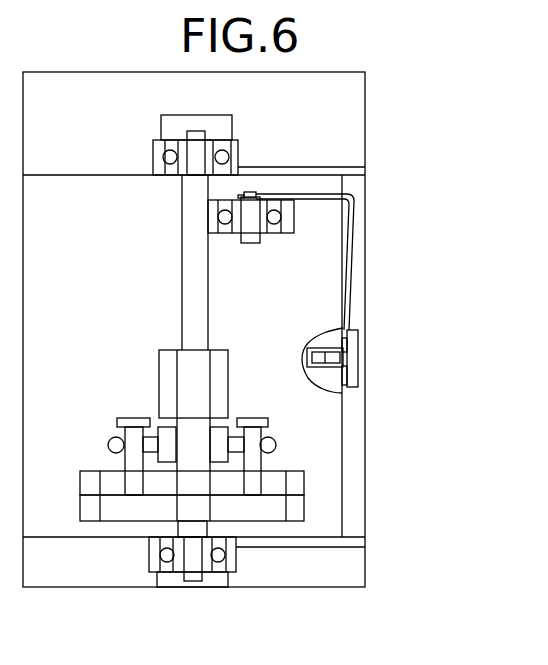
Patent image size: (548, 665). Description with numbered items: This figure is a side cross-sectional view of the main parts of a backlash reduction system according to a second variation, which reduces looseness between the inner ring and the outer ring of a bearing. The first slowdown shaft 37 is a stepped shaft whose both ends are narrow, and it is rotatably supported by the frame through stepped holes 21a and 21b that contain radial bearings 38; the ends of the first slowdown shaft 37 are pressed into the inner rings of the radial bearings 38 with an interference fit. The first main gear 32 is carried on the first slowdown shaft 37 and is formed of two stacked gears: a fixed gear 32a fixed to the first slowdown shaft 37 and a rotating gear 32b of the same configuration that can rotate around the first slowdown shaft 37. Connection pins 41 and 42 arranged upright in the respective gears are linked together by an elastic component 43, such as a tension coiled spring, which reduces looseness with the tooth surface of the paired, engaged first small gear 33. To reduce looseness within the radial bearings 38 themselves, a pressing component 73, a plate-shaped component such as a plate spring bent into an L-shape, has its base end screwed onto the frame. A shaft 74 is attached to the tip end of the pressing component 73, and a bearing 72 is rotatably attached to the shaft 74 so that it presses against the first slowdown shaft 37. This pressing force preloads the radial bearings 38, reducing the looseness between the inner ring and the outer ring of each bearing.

The stepped hole 21a is at (170, 583).
The stepped hole 21b is at (153, 163).
The first main gear 32 is at (284, 501).
The fixed gear 32a is at (298, 511).
The rotating gear 32b is at (300, 483).
The first small gear 33 is at (222, 360).
The first slowdown shaft 37 is at (208, 318).
The radial bearing 38 is at (239, 150).
The connection pin 41 is at (260, 432).
The connection pin 42 is at (133, 418).
The elastic component 43 is at (278, 443).
The bearing 72 is at (285, 233).
The pressing component 73 is at (357, 249).
The shaft 74 is at (248, 244).